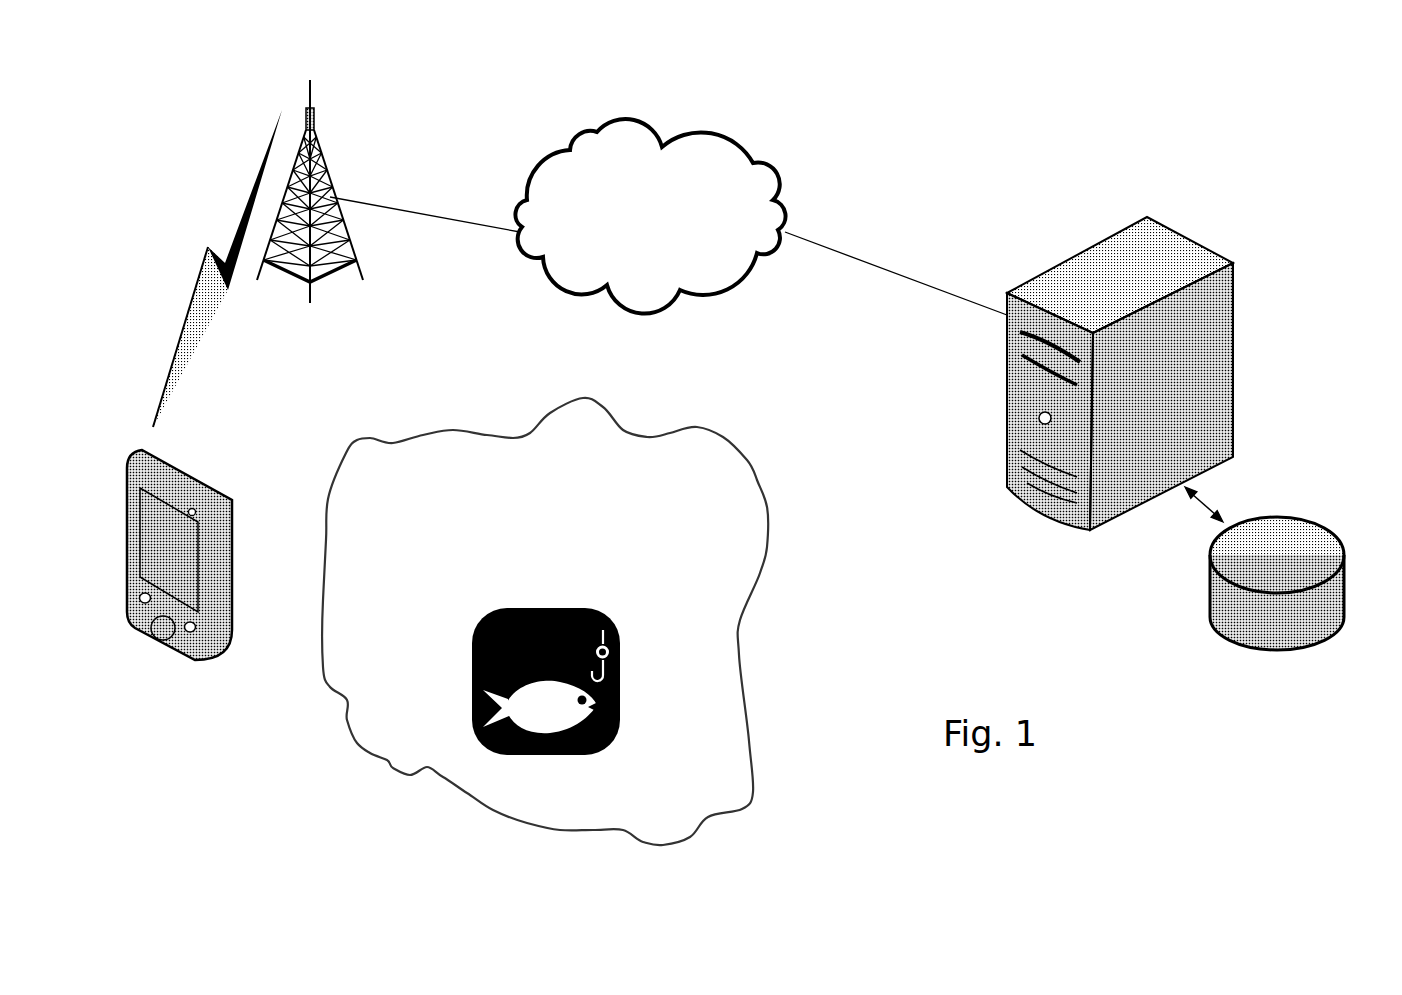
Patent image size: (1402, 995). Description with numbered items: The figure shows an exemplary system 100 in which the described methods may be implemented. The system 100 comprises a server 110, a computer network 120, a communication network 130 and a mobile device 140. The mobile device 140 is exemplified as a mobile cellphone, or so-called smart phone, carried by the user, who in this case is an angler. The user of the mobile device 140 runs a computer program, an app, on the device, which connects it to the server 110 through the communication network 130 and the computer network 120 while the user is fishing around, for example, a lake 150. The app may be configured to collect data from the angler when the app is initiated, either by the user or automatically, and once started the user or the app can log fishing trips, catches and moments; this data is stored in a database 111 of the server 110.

The system 100 is at (1026, 108).
The server 110 is at (1234, 369).
The database 111 is at (1277, 531).
The computer network 120 is at (650, 216).
The communication network 130 is at (374, 132).
The mobile device 140 is at (187, 462).
The lake 150 is at (767, 550).